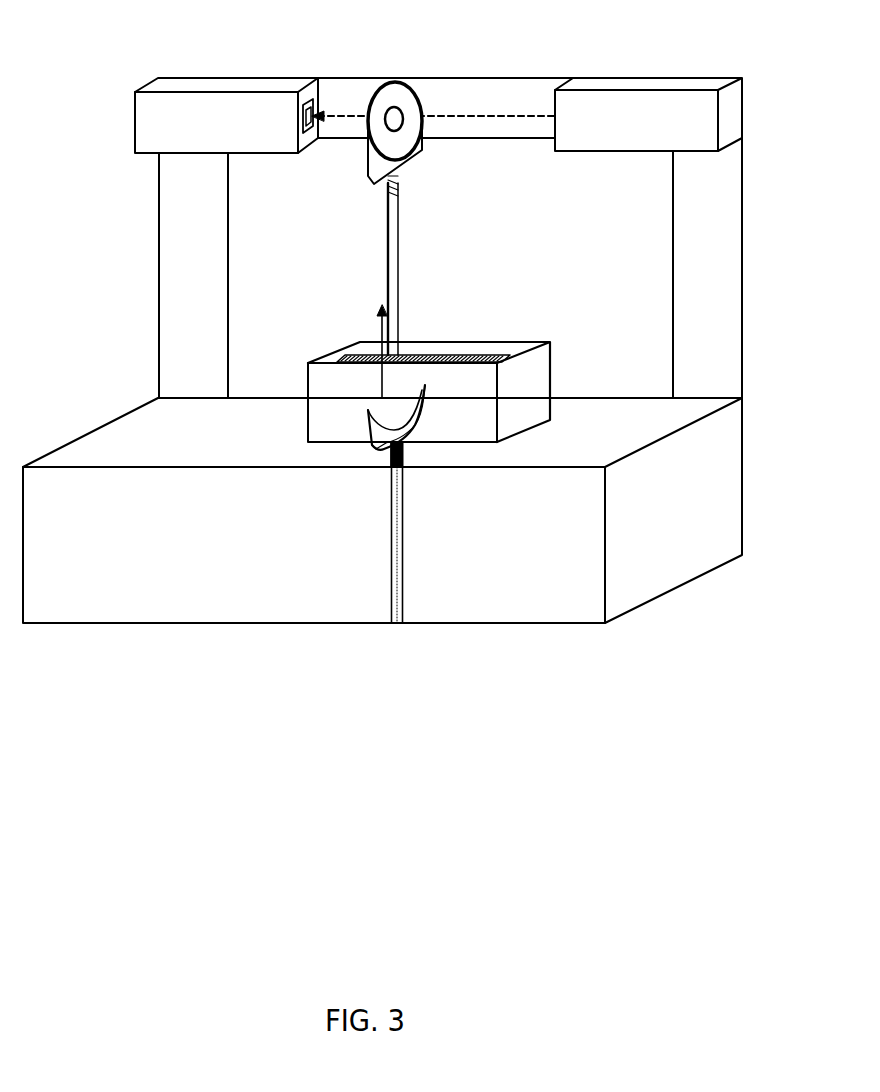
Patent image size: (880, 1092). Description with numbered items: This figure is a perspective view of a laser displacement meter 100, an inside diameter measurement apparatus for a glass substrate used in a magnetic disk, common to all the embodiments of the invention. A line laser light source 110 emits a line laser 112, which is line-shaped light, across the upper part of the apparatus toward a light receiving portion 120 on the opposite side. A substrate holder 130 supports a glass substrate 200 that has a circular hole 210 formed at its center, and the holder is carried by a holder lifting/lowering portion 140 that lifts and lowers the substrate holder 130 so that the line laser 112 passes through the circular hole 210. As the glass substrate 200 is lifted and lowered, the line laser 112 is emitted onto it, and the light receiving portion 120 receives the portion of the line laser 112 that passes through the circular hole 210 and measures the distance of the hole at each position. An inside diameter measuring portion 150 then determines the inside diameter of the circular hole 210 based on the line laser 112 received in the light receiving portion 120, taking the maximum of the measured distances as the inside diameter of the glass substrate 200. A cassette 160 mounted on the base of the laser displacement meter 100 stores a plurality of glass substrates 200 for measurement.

The laser displacement meter 100 is at (383, 655).
The line laser light source 110 is at (655, 100).
The line laser 112 is at (475, 116).
The light receiving portion 120 is at (311, 103).
The substrate holder 130 is at (370, 175).
The holder lifting/lowering portion 140 is at (395, 245).
The inside diameter measuring portion 150 is at (158, 125).
The cassette 160 is at (313, 408).
The glass substrate 200 is at (398, 95).
The circular hole 210 is at (394, 130).